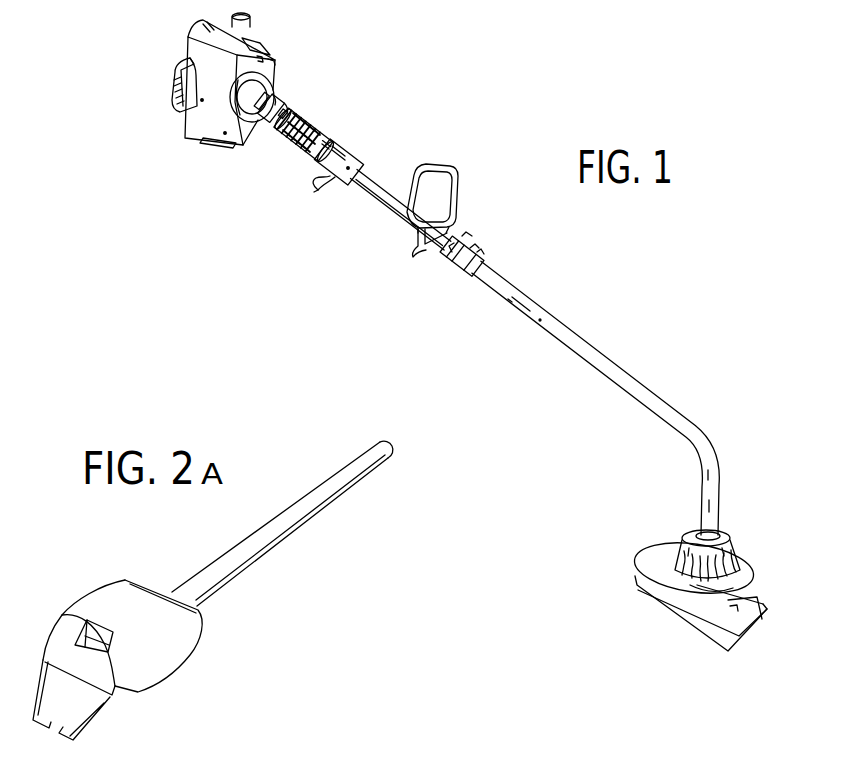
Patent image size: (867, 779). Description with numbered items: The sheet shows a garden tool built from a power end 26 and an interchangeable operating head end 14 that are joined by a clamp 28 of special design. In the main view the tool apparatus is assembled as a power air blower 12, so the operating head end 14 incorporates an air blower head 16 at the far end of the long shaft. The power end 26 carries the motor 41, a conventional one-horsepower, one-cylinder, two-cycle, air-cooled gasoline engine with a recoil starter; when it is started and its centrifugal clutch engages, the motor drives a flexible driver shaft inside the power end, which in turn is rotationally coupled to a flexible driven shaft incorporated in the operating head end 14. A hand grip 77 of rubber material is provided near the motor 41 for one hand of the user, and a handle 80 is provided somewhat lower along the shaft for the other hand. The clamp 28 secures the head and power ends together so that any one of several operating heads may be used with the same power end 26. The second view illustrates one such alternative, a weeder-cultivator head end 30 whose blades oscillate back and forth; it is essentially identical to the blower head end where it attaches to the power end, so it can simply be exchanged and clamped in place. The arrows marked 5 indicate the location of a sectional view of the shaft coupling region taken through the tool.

In FIG. 1, the motor 41 is at (197, 31).
In FIG. 1, the power end 26 is at (278, 152).
In FIG. 1, the hand grip 77 is at (313, 127).
In FIG. 1, the power air blower 12 is at (450, 277).
In FIG. 1, the handle 80 is at (443, 167).
In FIG. 1, the clamp 28 is at (467, 255).
In FIG. 1, the operating head end 14 is at (597, 349).
In FIG. 1, the air blower head 16 is at (740, 566).
In FIG. 1, the section line 5- 5 is at (257, 113).
In FIG. 2A, the weeder-cultivator head end 30 is at (208, 611).